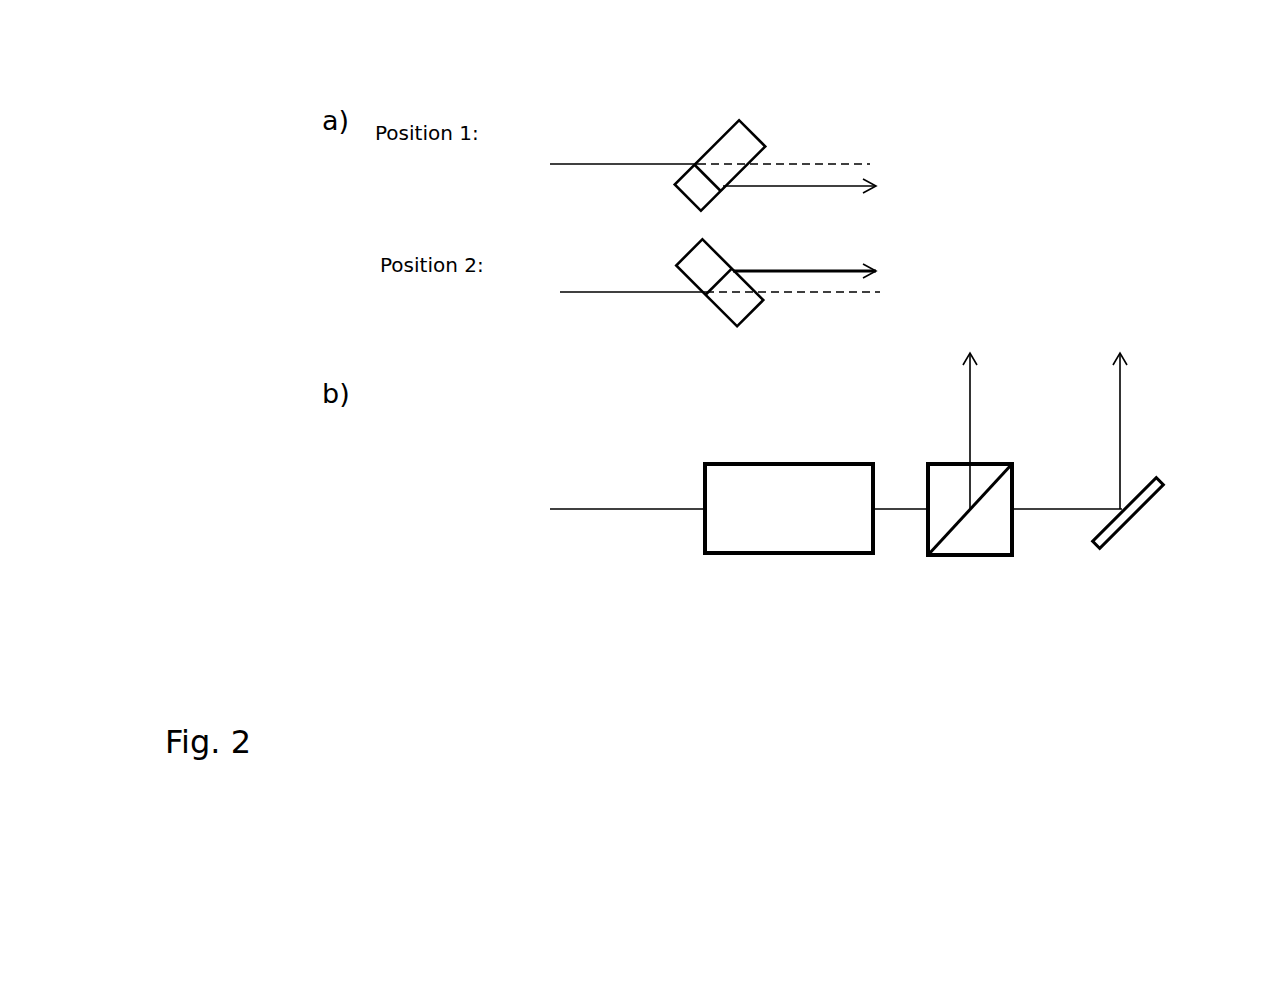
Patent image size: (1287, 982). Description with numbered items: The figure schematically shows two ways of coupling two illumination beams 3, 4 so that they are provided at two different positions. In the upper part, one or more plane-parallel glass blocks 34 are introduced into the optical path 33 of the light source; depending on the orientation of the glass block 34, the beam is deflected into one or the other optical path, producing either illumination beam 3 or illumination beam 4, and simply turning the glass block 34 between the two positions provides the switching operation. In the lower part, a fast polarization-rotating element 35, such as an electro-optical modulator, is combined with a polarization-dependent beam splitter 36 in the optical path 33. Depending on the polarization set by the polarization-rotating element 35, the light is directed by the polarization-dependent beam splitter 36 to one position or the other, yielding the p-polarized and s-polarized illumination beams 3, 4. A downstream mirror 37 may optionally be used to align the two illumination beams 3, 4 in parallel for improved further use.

The illumination beam 3 is at (793, 187).
The illumination beam 4 is at (838, 270).
The optical path of the light source 33 is at (582, 163).
The plane-parallel glass block 34 is at (717, 137).
The polarization-rotating element 35 is at (788, 555).
The polarization-dependent beam splitter 36 is at (973, 555).
The mirror 37 is at (1120, 533).